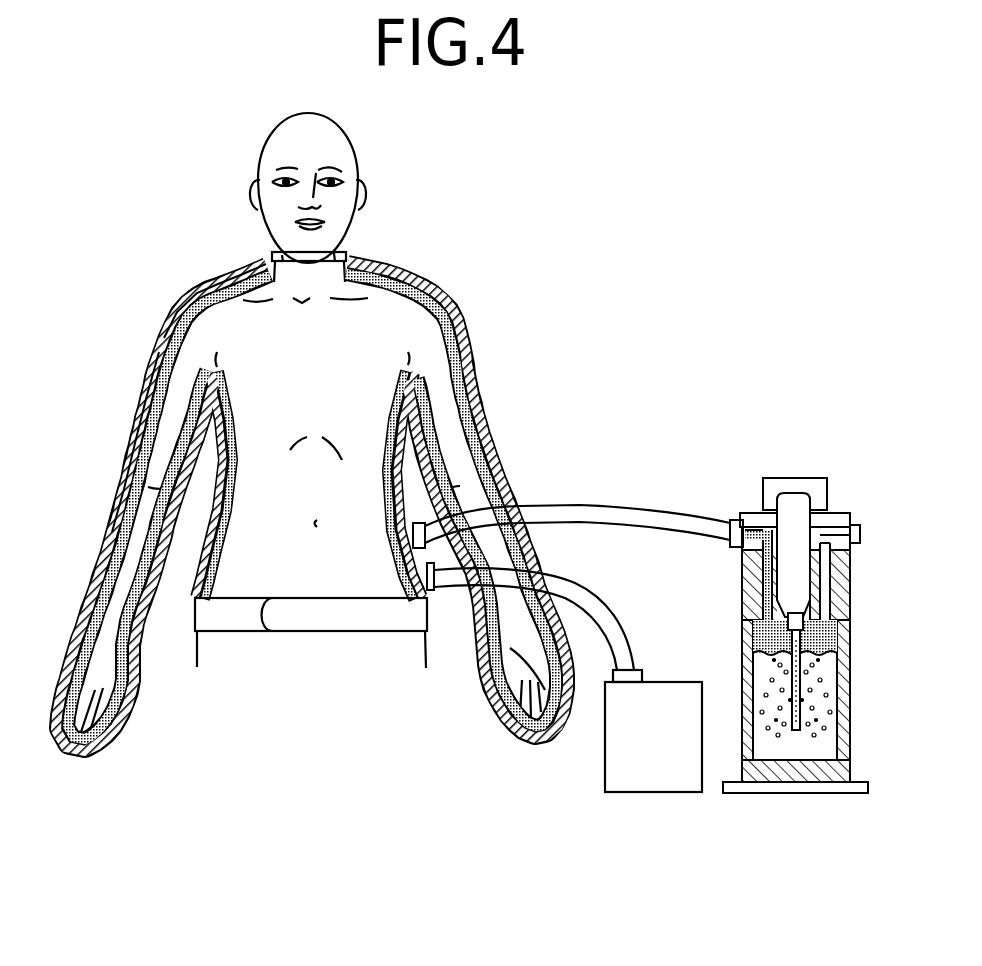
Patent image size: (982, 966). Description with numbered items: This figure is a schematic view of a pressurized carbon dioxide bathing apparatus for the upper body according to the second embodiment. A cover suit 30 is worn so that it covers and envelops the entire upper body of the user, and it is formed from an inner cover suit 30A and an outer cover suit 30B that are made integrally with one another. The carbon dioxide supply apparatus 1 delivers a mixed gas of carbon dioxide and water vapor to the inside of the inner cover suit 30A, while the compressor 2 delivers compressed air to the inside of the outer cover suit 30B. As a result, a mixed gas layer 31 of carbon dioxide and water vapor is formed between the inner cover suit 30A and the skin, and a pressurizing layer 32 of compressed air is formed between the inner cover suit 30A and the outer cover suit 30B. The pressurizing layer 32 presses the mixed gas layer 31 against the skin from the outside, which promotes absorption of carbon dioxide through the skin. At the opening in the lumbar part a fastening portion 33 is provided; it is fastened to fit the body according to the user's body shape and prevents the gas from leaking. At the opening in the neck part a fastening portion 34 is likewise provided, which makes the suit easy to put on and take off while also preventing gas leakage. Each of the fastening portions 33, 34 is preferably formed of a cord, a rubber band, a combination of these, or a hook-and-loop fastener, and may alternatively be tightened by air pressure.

The carbon dioxide supply apparatus 1 is at (815, 477).
The compressor 2 is at (662, 680).
The cover suit 30 is at (186, 266).
The inner cover suit 30A is at (170, 310).
The outer cover suit 30B is at (150, 357).
The mixed gas layer 31 is at (147, 400).
The pressurizing layer 32 is at (137, 450).
The fastening portion 33 is at (313, 633).
The fastening portion 34 is at (343, 252).